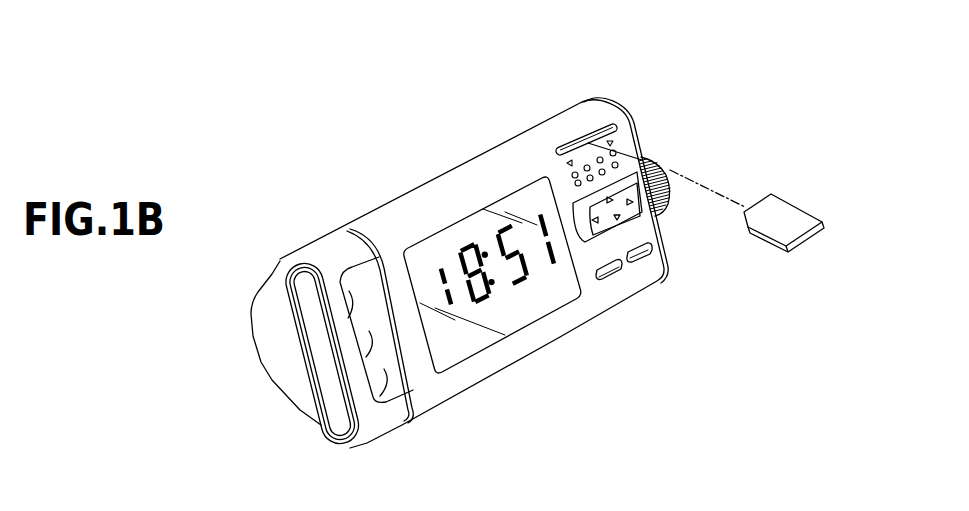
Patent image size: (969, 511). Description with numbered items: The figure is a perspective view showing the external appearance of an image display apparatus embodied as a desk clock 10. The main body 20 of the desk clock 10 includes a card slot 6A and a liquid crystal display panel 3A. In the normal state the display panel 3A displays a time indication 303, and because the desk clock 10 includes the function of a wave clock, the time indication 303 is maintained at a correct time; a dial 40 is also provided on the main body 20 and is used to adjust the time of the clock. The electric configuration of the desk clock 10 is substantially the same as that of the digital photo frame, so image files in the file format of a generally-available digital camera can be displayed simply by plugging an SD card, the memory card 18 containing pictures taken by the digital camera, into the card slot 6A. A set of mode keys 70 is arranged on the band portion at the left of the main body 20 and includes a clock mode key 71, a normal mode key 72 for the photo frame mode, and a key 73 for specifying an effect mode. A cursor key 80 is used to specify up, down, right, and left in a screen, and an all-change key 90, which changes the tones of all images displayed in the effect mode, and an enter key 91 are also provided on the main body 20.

The desk clock 10 is at (652, 124).
The main body 20 is at (463, 206).
The time indication 303 is at (463, 252).
The liquid crystal display panel 3A is at (517, 318).
The card slot 6A is at (598, 130).
The cursor key 80 is at (590, 207).
The dial 40 is at (670, 202).
The all-change key 90 is at (648, 257).
The enter key 91 is at (618, 278).
The memory card 18 is at (775, 198).
The mode keys 70 is at (220, 387).
The clock mode key 71 is at (385, 297).
The normal mode key 72 is at (407, 330).
The effect mode key 73 is at (410, 380).